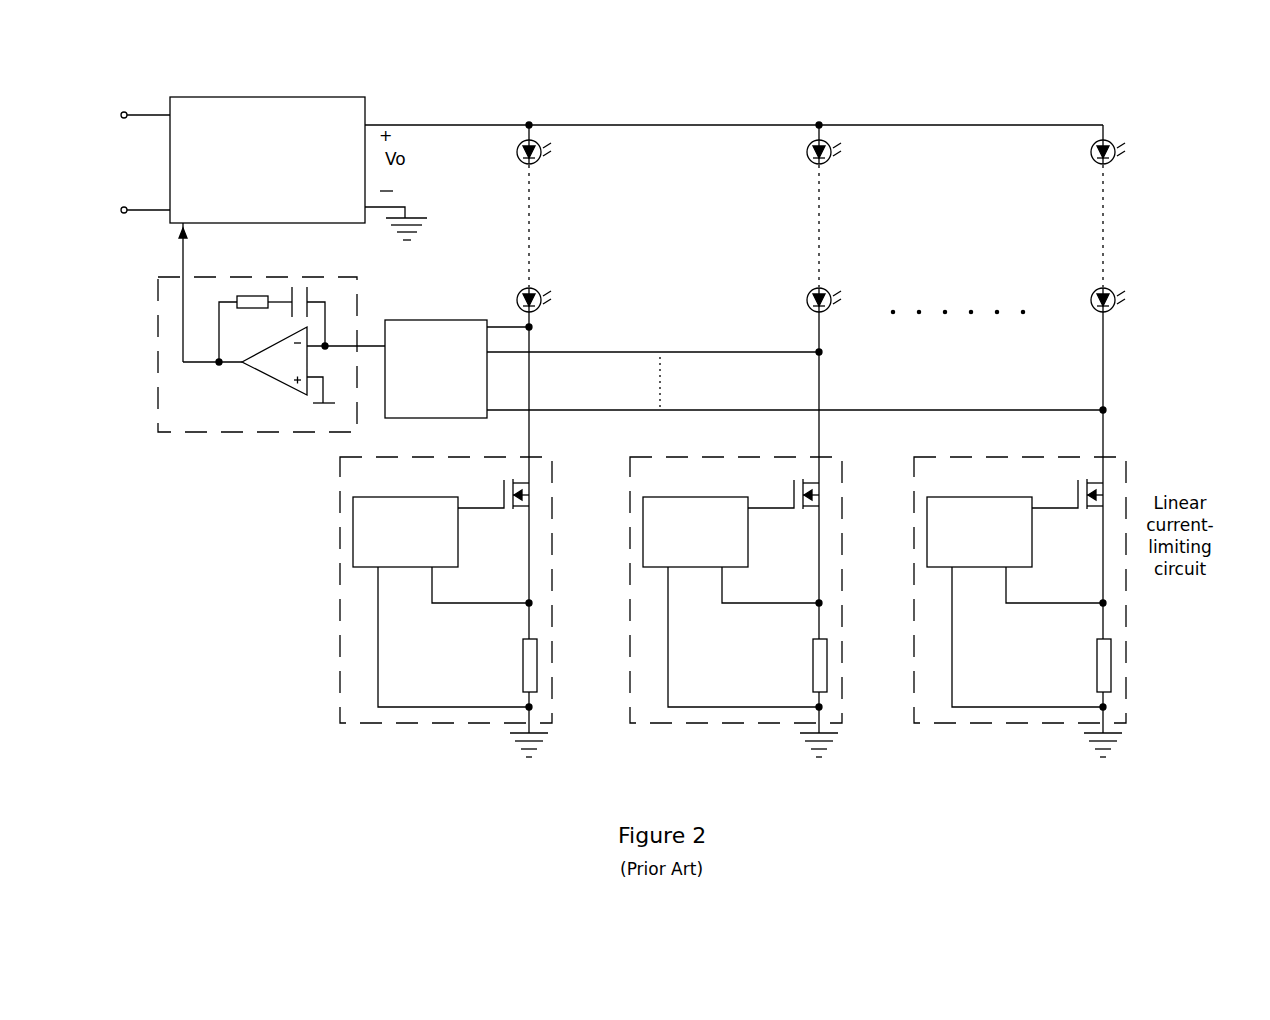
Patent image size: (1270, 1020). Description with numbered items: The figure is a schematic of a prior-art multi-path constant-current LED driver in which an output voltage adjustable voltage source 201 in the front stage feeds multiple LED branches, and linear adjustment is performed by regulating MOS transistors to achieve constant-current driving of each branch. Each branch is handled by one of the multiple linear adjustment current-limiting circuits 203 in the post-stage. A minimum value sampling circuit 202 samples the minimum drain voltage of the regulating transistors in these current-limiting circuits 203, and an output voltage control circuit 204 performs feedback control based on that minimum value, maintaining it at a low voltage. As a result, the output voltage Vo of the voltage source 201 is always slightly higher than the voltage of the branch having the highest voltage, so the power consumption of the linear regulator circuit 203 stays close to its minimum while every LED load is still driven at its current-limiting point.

The output voltage adjustable voltage source 201 is at (251, 123).
The minimum value sampling circuit 202 is at (745, 333).
The linear adjustment current-limiting circuit 203 is at (733, 595).
The output voltage control circuit 204 is at (264, 356).